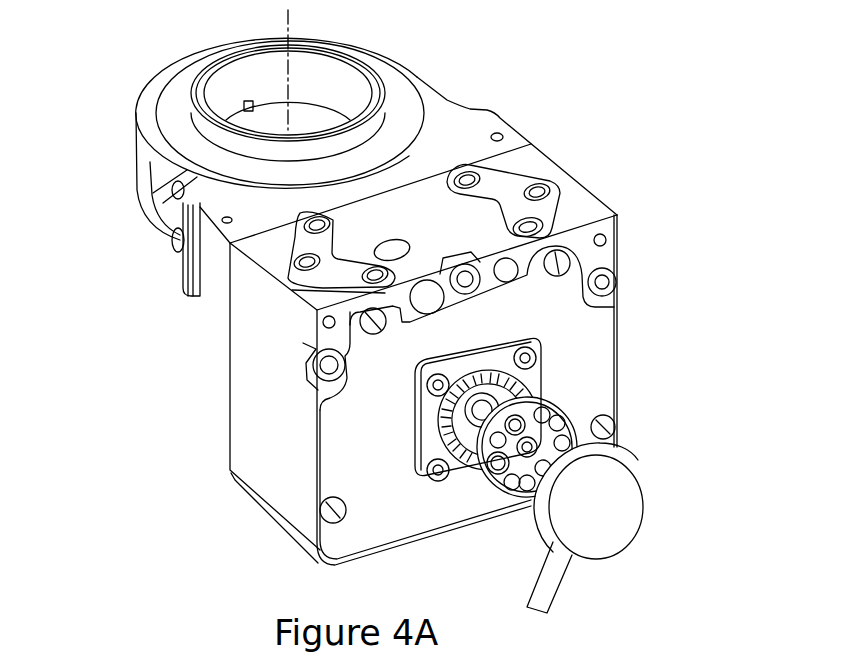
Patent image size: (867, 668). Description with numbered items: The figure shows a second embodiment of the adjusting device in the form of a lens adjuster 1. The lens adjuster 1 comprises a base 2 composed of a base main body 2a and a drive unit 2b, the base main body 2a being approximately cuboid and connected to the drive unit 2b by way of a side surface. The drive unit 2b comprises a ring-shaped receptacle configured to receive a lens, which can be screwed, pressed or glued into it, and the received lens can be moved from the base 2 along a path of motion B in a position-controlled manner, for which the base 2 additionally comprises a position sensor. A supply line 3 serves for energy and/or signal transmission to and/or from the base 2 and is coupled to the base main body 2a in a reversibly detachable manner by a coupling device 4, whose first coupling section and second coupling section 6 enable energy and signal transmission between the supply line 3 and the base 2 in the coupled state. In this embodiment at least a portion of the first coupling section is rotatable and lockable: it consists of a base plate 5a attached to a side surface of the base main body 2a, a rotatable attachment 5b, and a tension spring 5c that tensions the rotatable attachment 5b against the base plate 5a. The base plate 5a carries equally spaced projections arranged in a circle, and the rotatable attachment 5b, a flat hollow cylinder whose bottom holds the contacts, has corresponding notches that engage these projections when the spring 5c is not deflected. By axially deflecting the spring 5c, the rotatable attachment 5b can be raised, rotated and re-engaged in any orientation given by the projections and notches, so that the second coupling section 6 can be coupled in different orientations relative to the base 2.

The lens adjuster 1 is at (82, 92).
The path of motion B is at (288, 50).
The base 2 is at (610, 27).
The base main body 2a is at (488, 217).
The drive unit 2b is at (443, 146).
The supply line 3 is at (553, 582).
The coupling device 4 is at (467, 498).
The base plate 5a is at (532, 374).
The rotatable attachment 5b is at (567, 427).
The tension spring 5c is at (435, 413).
The second coupling section 6 is at (600, 510).